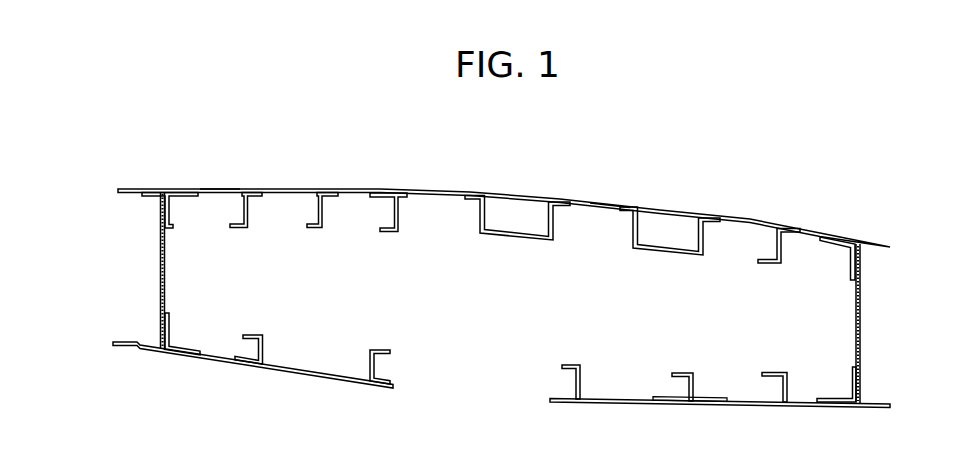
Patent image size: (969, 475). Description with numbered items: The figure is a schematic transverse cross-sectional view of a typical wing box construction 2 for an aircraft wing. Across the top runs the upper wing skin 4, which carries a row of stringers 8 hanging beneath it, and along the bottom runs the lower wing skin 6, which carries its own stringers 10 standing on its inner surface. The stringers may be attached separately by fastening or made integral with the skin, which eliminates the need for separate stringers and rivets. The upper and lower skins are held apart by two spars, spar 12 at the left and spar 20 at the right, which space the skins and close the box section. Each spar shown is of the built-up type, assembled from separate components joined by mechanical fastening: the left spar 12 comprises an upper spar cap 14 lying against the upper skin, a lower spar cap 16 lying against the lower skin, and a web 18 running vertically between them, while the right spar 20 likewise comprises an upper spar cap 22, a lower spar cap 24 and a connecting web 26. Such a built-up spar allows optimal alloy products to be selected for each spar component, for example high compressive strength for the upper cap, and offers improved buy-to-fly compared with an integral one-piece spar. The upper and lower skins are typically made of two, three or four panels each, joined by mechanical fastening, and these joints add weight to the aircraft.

The wing box construction 2 is at (750, 218).
The upper wing skin 4 is at (218, 188).
The lower wing skin 6 is at (225, 371).
The stringers 8 is at (327, 212).
The stringers 10 is at (377, 368).
The spar 12 is at (152, 257).
The upper spar cap 14 is at (172, 212).
The lower spar cap 16 is at (182, 352).
The web 18 is at (160, 283).
The spar 20 is at (870, 318).
The upper spar cap 22 is at (838, 248).
The lower spar cap 24 is at (828, 397).
The web 26 is at (860, 340).